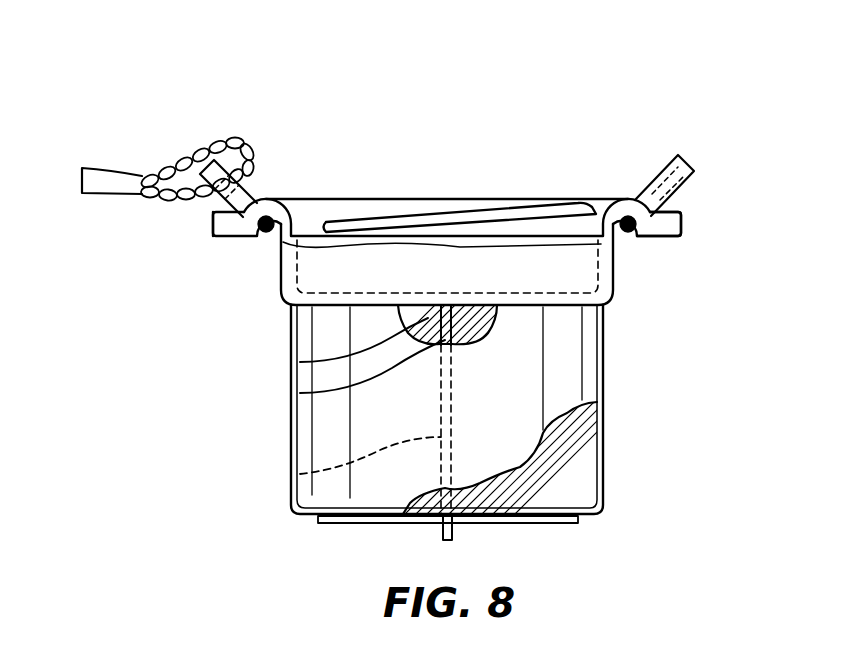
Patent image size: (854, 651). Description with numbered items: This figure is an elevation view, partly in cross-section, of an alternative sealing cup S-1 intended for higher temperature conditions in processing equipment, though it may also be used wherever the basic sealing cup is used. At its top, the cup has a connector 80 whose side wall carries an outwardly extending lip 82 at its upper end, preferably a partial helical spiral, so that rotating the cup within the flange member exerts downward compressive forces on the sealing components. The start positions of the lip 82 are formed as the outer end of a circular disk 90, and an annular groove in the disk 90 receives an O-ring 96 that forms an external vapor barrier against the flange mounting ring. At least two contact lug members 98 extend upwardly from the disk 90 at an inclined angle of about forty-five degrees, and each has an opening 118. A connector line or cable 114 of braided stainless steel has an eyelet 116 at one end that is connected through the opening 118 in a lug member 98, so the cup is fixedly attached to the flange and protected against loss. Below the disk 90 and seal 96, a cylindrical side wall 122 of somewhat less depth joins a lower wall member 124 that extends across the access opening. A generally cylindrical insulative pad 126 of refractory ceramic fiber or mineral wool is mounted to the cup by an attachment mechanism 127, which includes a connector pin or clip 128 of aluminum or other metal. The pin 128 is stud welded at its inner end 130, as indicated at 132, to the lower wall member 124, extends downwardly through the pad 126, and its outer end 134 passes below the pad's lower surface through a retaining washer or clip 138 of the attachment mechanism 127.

The alternative sealing cup S-1 is at (174, 63).
The connector 80 is at (697, 198).
The lip 82 is at (682, 234).
The circular disk 90 is at (198, 238).
The O-ring 96 is at (634, 233).
The contact lug members 98 is at (256, 184).
The connector line or cable 114 is at (108, 175).
The eyelet 116 is at (194, 148).
The opening 118 is at (215, 198).
The cylindrical side wall 122 is at (281, 277).
The lower wall member 124 is at (334, 307).
The insulative pad 126 is at (578, 362).
The attachment mechanism 127 is at (418, 528).
The connector pin or clip 128 is at (300, 475).
The inner end 130 is at (300, 393).
The stud weld 132 is at (300, 362).
The outer end 134 is at (454, 535).
The retaining washer or clip 138 is at (327, 524).